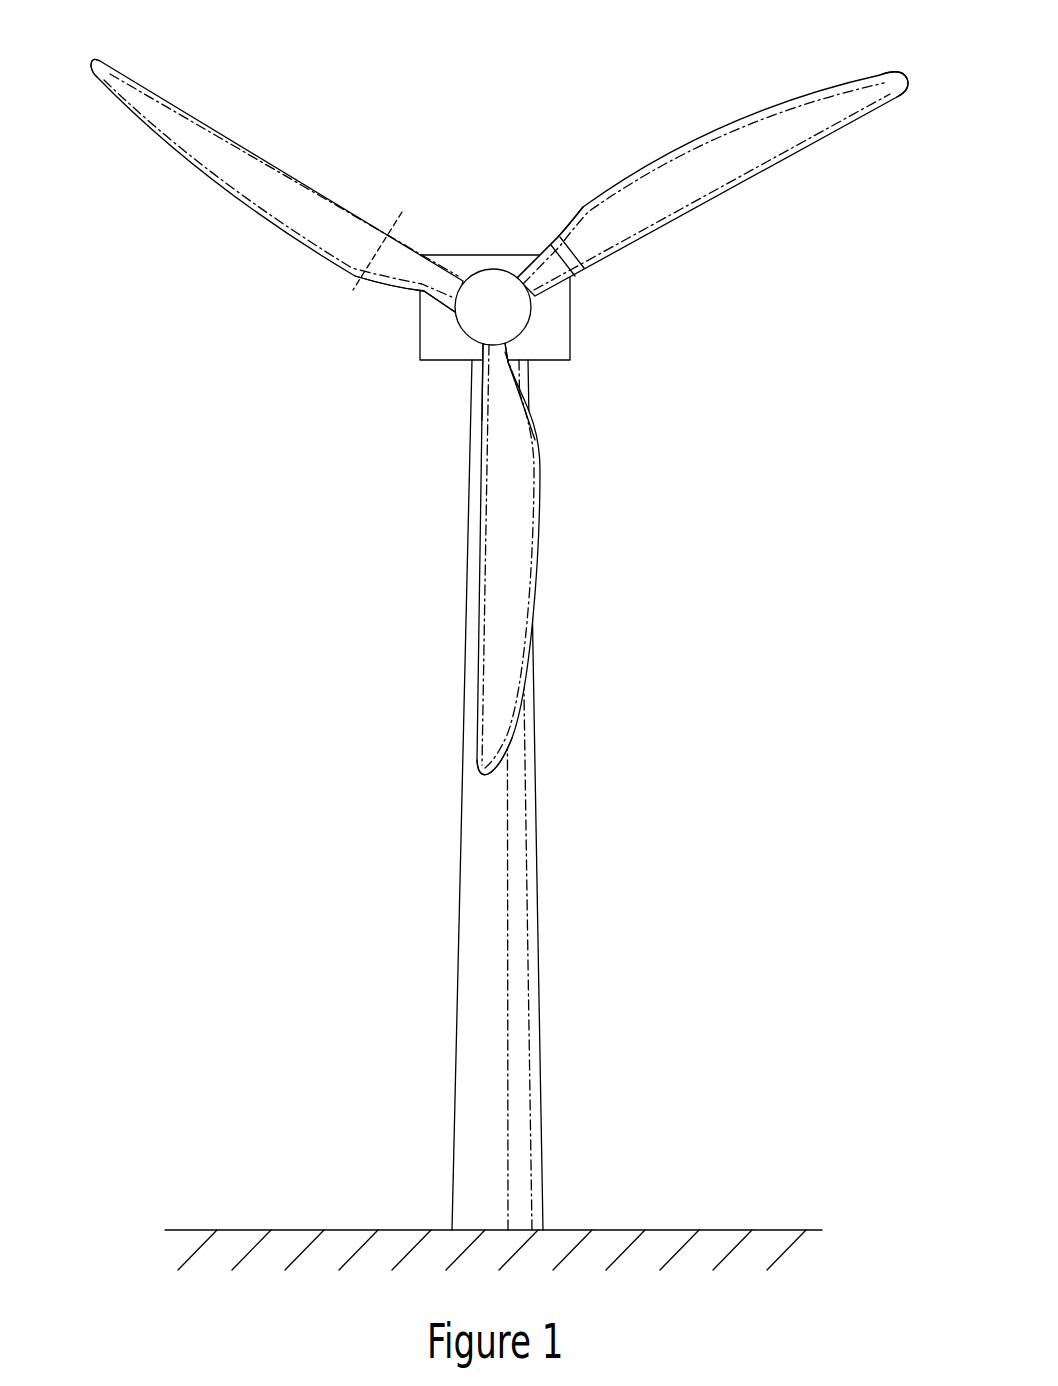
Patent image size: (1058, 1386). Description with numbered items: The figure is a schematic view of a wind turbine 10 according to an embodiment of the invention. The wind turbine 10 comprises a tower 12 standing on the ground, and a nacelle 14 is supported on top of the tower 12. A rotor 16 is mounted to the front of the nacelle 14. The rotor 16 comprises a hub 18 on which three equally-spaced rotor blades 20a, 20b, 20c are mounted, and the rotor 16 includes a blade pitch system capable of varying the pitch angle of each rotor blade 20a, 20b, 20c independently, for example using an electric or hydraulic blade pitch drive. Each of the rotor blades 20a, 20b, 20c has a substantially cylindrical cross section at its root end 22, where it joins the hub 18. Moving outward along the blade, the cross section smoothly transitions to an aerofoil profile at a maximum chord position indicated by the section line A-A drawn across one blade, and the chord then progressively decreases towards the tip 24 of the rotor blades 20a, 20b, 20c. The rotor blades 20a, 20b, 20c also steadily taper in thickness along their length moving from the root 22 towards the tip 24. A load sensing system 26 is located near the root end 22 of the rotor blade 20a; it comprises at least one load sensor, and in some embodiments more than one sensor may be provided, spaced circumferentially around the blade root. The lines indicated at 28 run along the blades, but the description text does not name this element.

The wind turbine 10 is at (502, 635).
The tower 12 is at (575, 1082).
The nacelle 14 is at (605, 364).
The rotor 16 is at (502, 389).
The hub 18 is at (457, 323).
The rotor blade 20a is at (720, 197).
The rotor blade 20b is at (543, 484).
The rotor blade 20c is at (222, 189).
The root end 22 is at (612, 418).
The tip 24 is at (160, 70).
The load sensing system 26 is at (610, 287).
The conductor line 28 is at (826, 107).